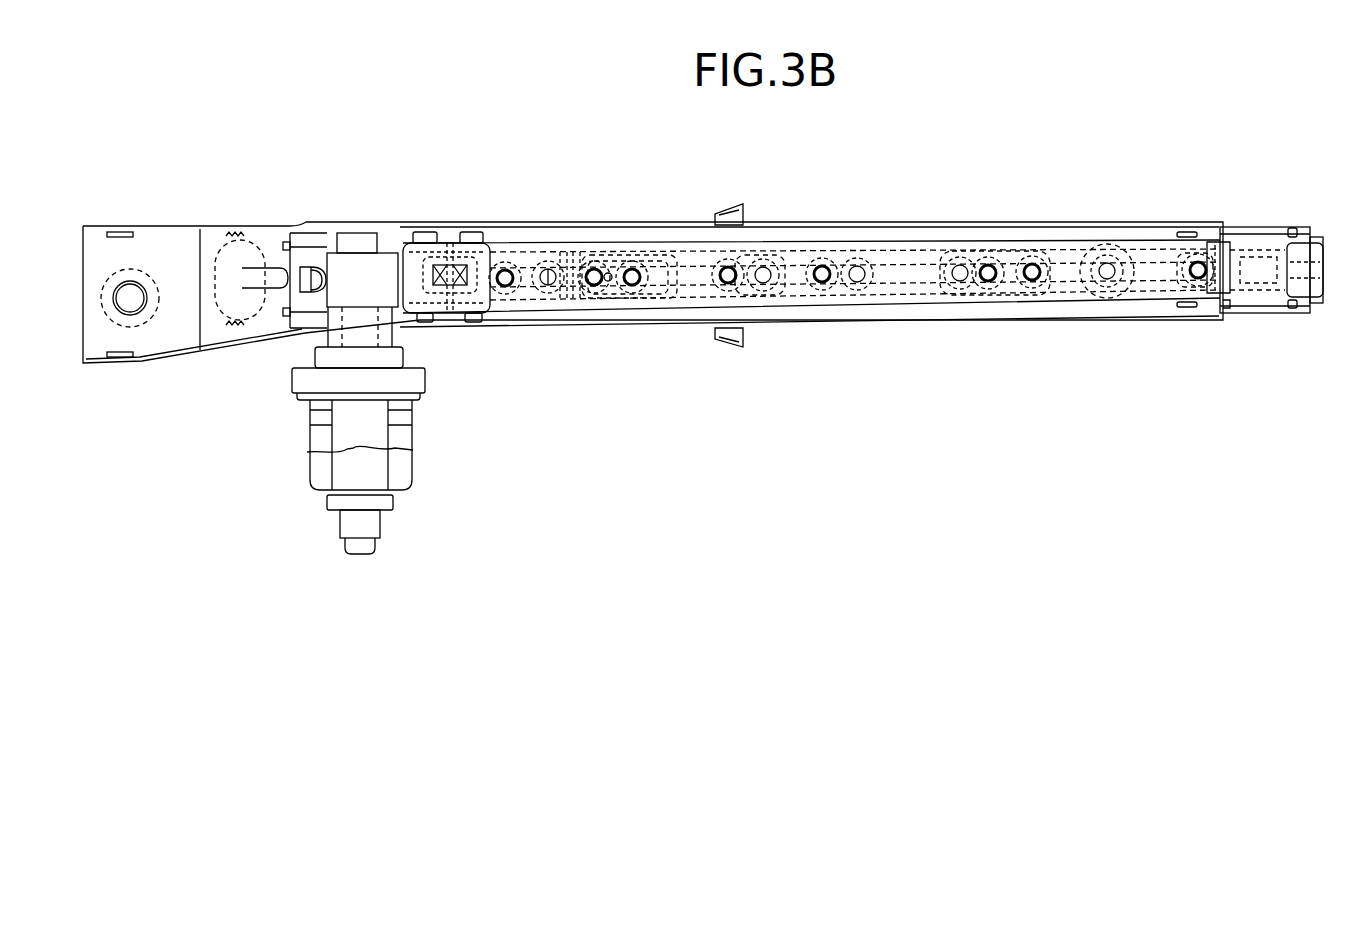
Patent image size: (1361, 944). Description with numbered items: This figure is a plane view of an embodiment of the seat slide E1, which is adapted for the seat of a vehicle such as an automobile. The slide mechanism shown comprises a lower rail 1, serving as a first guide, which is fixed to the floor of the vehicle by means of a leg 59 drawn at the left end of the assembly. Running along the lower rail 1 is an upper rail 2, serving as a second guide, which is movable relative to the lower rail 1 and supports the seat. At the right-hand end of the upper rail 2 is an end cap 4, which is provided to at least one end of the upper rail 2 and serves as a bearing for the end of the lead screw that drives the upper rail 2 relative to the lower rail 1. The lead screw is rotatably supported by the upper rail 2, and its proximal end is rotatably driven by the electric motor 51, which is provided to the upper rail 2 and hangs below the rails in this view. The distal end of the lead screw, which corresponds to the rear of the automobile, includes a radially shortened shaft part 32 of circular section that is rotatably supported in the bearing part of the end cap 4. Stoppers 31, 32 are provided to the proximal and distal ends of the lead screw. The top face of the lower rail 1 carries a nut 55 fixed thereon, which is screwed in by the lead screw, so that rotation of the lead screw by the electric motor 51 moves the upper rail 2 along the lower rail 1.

The lower rail 1 is at (1150, 323).
The upper rail 2 is at (1247, 225).
The end cap 4 is at (1323, 267).
The stopper 31 is at (1233, 310).
The shaft part 32 is at (557, 242).
The electric motor 51 is at (313, 445).
The nut 55 is at (685, 300).
The leg 59 is at (127, 363).
The seat slide E1 is at (1293, 378).